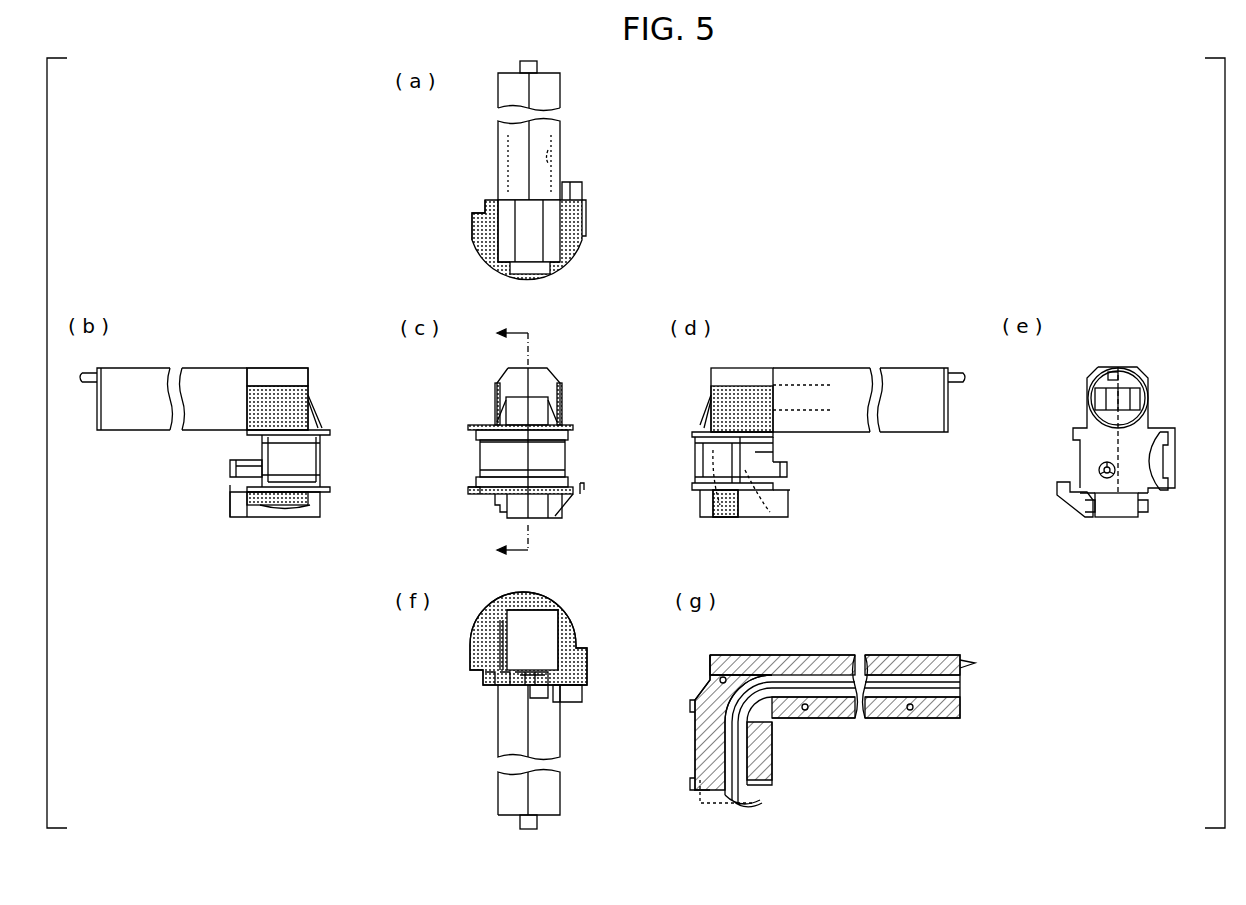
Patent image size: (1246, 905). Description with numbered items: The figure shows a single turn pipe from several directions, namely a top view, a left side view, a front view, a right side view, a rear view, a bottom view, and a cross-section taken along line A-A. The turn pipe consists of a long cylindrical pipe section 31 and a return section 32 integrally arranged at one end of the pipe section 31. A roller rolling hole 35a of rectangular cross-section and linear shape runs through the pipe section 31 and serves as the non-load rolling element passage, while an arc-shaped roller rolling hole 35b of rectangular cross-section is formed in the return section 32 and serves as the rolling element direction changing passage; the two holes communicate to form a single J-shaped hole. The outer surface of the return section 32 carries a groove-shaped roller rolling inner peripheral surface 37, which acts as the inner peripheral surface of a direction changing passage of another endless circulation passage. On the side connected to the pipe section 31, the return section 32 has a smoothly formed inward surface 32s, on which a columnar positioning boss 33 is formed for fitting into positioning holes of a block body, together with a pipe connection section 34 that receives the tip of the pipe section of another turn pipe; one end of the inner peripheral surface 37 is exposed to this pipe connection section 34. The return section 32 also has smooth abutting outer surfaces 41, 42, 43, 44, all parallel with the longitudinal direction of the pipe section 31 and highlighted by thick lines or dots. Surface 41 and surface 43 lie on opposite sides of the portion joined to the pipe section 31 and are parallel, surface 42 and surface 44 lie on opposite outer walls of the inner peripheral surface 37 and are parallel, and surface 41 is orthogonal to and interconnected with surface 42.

The pipe section 31 is at (498, 148).
The return section 32 is at (522, 407).
The inward surface 32s is at (1085, 468).
The positioning boss 33 is at (1099, 472).
The pipe connection section 34 is at (1158, 457).
The roller rolling hole 35a is at (548, 152).
The roller rolling hole 35b is at (752, 505).
The roller rolling inner peripheral surface 37 is at (490, 456).
The abutting outer surface 41 is at (482, 224).
The abutting outer surface 42 is at (480, 238).
The abutting outer surface 43 is at (570, 238).
The abutting outer surface 44 is at (480, 640).